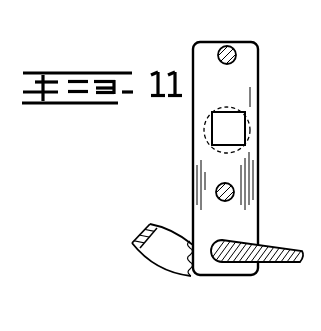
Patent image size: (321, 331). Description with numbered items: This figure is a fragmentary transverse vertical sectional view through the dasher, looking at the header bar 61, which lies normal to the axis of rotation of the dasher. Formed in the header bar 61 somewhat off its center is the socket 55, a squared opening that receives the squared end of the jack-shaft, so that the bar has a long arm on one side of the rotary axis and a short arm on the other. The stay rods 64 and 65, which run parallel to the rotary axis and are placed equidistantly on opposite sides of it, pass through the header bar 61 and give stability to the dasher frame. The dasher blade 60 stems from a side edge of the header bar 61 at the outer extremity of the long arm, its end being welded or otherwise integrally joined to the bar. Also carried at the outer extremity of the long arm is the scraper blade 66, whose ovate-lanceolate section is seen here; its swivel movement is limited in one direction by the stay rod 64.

The socket 55 is at (205, 130).
The dasher blade 60 is at (151, 223).
The header bar 61 is at (242, 158).
The stay rod 64 is at (246, 194).
The stay rod 65 is at (227, 46).
The scraper blade 66 is at (287, 248).